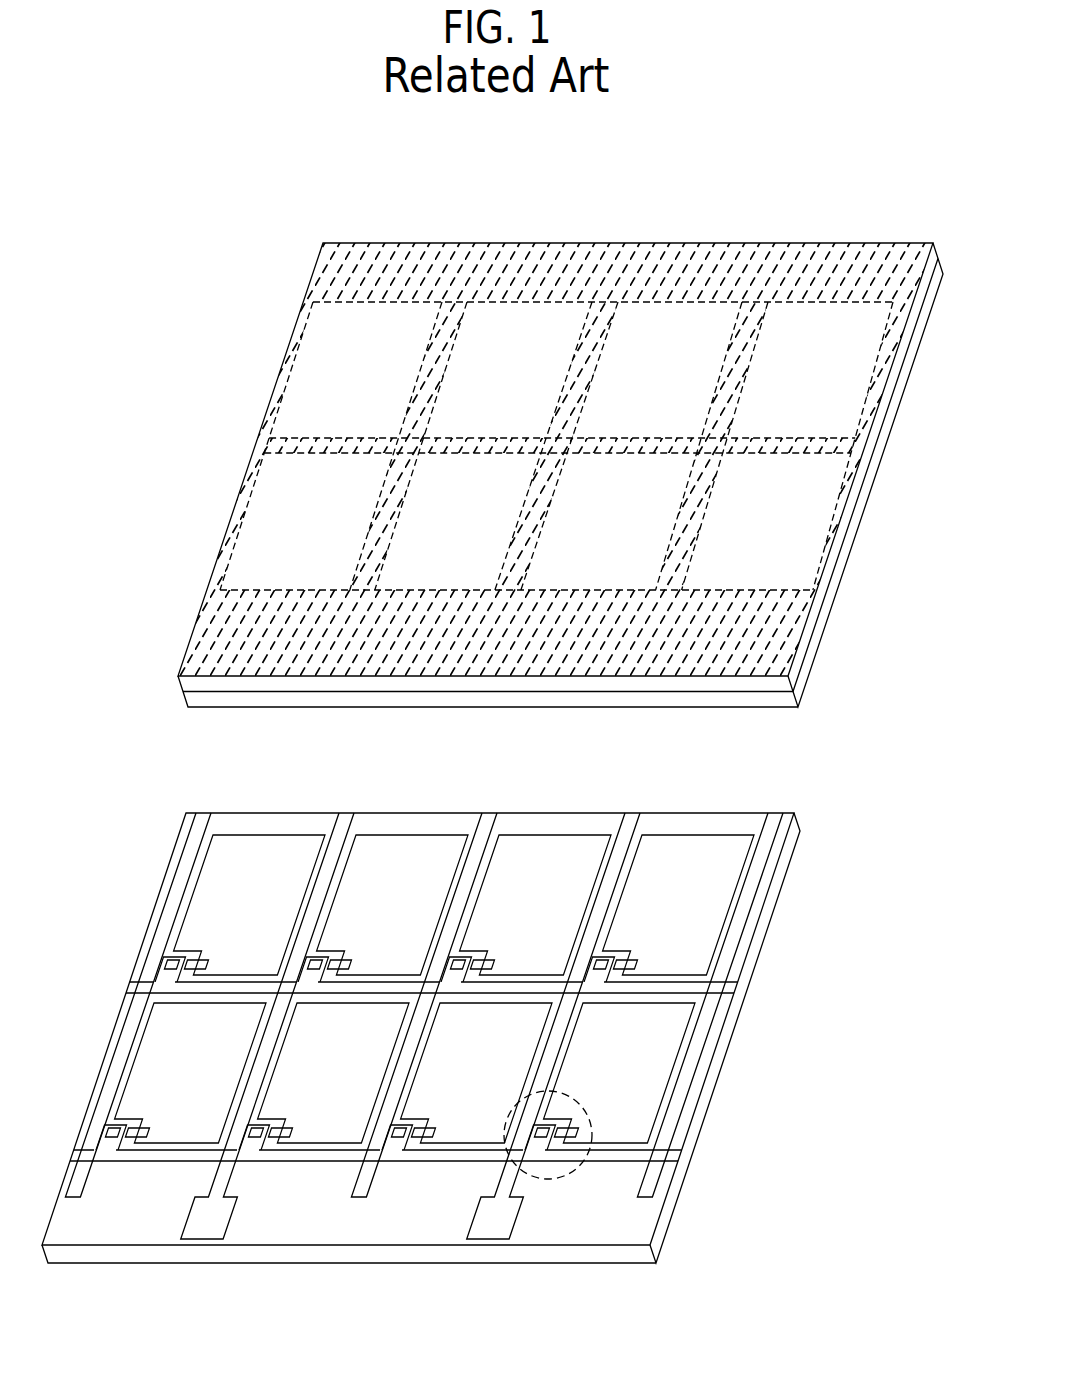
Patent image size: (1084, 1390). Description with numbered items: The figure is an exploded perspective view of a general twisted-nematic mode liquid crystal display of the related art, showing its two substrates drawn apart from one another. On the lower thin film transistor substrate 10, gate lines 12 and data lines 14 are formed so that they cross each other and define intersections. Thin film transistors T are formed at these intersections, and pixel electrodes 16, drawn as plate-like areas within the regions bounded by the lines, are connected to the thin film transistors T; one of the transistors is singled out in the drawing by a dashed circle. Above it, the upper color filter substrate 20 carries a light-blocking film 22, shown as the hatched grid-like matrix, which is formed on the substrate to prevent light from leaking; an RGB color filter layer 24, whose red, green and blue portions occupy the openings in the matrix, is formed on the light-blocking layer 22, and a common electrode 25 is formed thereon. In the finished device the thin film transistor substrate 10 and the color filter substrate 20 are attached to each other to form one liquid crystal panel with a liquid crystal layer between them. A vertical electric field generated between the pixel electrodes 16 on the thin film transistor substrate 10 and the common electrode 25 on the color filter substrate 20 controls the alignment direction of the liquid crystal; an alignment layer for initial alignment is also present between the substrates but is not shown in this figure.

The thin film transistor substrate 10 is at (648, 1258).
The gate lines 12 is at (662, 1158).
The data lines 14 is at (502, 1183).
The pixel electrodes 16 is at (670, 1092).
The thin film transistors T is at (548, 1177).
The color filter substrate 20 is at (782, 687).
The light-blocking film 22 is at (858, 450).
The RGB color filter layer 24 is at (620, 343).
The common electrode 25 is at (782, 702).